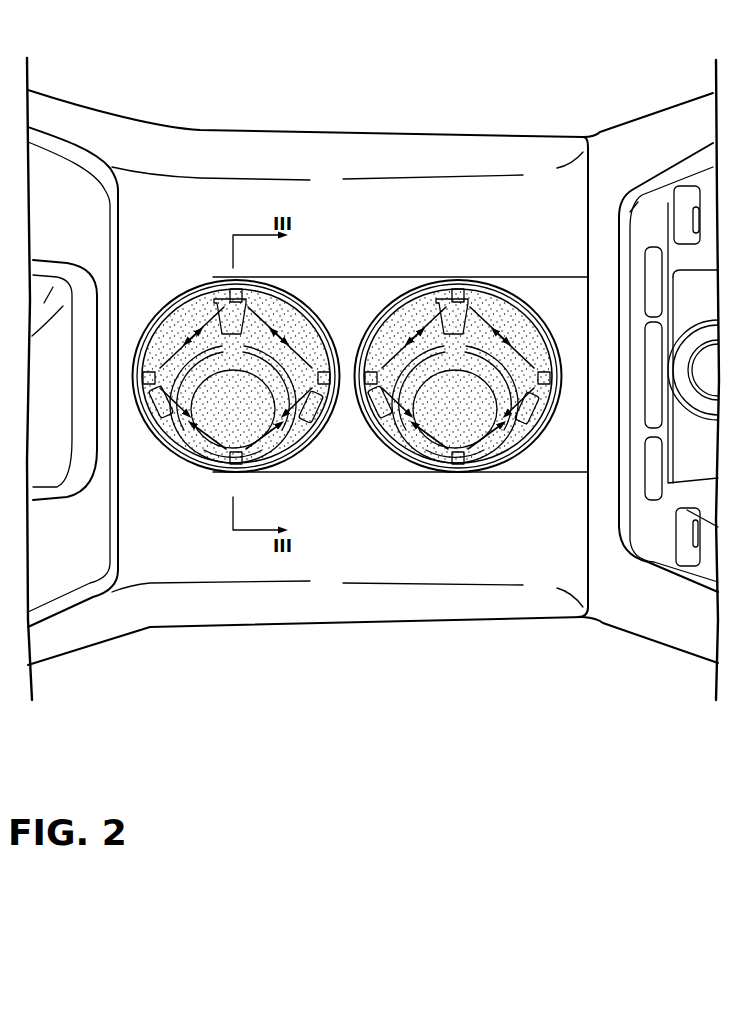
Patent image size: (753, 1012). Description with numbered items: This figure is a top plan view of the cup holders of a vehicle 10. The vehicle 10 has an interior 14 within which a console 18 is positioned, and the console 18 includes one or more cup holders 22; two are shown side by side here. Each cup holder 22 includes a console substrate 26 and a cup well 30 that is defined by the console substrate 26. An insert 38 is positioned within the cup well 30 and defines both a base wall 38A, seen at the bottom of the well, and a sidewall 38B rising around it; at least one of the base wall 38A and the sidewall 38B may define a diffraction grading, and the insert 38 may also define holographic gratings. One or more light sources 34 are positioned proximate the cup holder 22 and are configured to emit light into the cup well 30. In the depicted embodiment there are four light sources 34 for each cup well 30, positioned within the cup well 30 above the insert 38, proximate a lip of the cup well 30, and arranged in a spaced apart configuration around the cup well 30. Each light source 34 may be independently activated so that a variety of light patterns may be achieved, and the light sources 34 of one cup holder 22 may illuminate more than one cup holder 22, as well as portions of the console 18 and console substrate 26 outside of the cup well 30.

The vehicle 10 is at (611, 62).
The interior 14 is at (514, 118).
The console 18 is at (230, 126).
The cup holder 22 is at (203, 506).
The console substrate 26 is at (162, 258).
The cup well 30 is at (521, 444).
The light source 34 is at (146, 372).
The insert 38 is at (387, 423).
The base wall 38A is at (160, 418).
The sidewall 38B is at (187, 320).